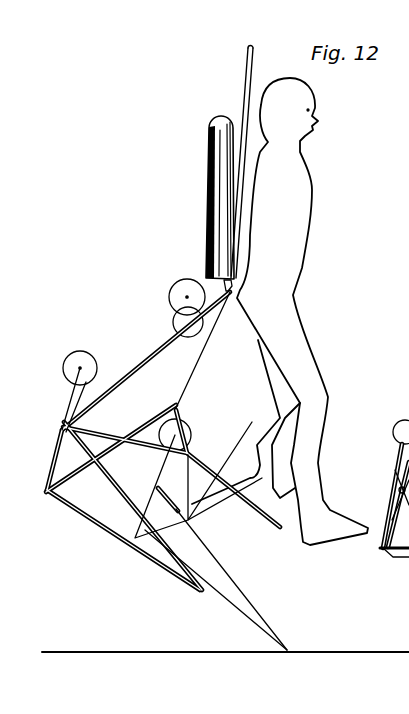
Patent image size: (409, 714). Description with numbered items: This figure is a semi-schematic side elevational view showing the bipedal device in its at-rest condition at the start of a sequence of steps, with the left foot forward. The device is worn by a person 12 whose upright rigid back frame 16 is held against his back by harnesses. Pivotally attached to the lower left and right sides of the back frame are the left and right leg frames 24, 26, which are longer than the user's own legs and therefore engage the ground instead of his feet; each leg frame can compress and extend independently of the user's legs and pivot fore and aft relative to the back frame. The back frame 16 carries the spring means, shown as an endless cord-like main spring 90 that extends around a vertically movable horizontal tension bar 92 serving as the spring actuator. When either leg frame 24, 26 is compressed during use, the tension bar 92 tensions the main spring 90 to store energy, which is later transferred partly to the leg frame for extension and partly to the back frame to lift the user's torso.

The person 12 is at (298, 204).
The back frame 16 is at (246, 62).
The left leg frame 24 is at (113, 543).
The right leg frame 26 is at (252, 593).
The main spring 90 is at (209, 160).
The tension bar 92 is at (216, 192).